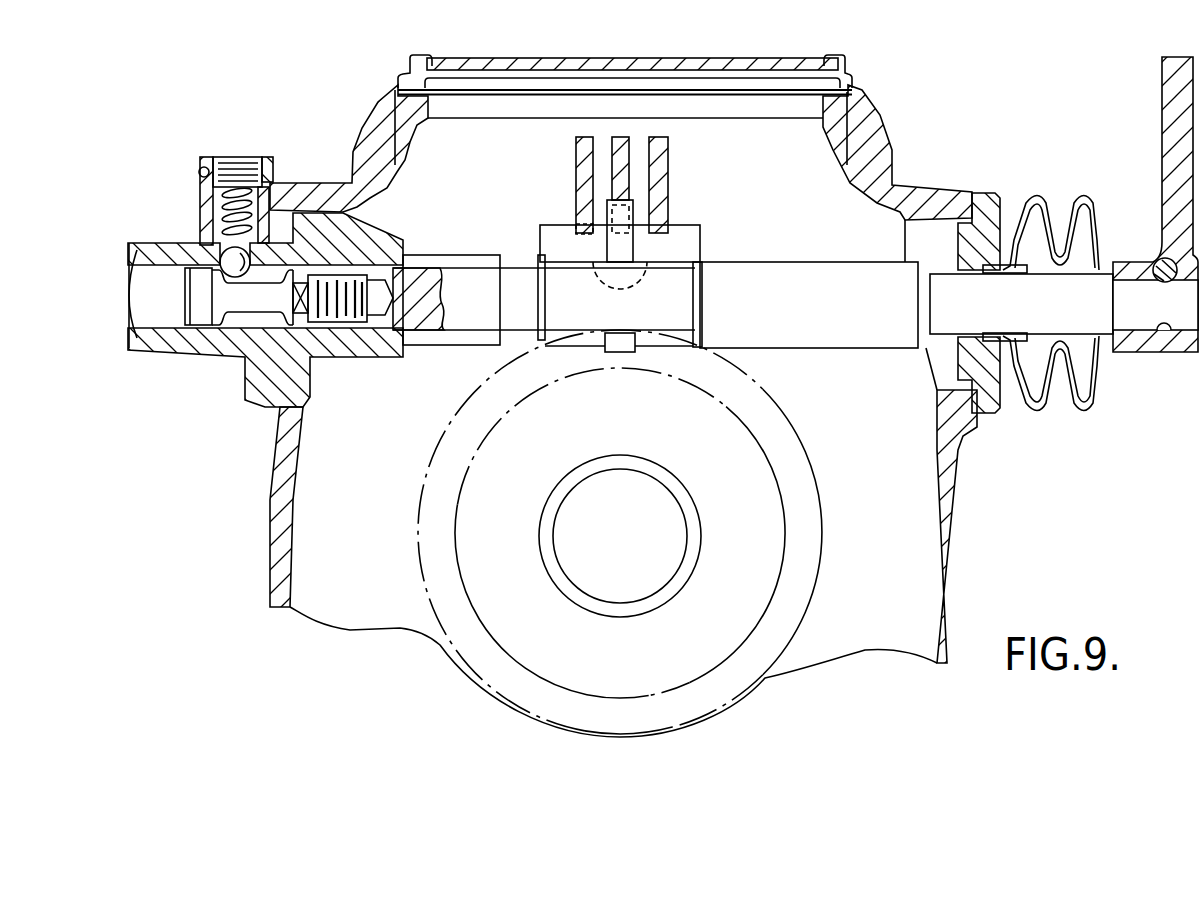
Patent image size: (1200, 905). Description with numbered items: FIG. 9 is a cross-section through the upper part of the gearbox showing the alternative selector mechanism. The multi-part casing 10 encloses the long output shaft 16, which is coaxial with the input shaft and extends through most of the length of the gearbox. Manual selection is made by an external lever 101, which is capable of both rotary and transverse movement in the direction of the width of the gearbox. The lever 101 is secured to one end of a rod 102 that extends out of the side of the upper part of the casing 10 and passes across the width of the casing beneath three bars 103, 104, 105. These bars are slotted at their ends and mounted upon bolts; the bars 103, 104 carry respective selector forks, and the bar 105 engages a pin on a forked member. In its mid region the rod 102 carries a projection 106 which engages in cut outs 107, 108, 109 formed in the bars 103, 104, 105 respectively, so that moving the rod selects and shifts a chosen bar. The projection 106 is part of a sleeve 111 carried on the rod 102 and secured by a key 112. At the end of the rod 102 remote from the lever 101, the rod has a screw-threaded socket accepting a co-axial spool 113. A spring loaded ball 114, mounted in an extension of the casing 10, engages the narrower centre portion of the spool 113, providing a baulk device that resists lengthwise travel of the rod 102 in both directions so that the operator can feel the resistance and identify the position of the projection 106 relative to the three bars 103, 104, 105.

The casing 10 is at (393, 168).
The output shaft 16 is at (660, 550).
The external lever 101 is at (1177, 117).
The rod 102 is at (1050, 313).
The bar 103 is at (655, 158).
The bar 104 is at (619, 147).
The bar 105 is at (583, 172).
The projection 106 is at (618, 243).
The cut out 107 is at (640, 203).
The cut out 108 is at (631, 200).
The cut out 109 is at (584, 201).
The sleeve 111 is at (658, 340).
The key 112 is at (600, 265).
The spool 113 is at (250, 303).
The spring loaded ball 114 is at (233, 260).